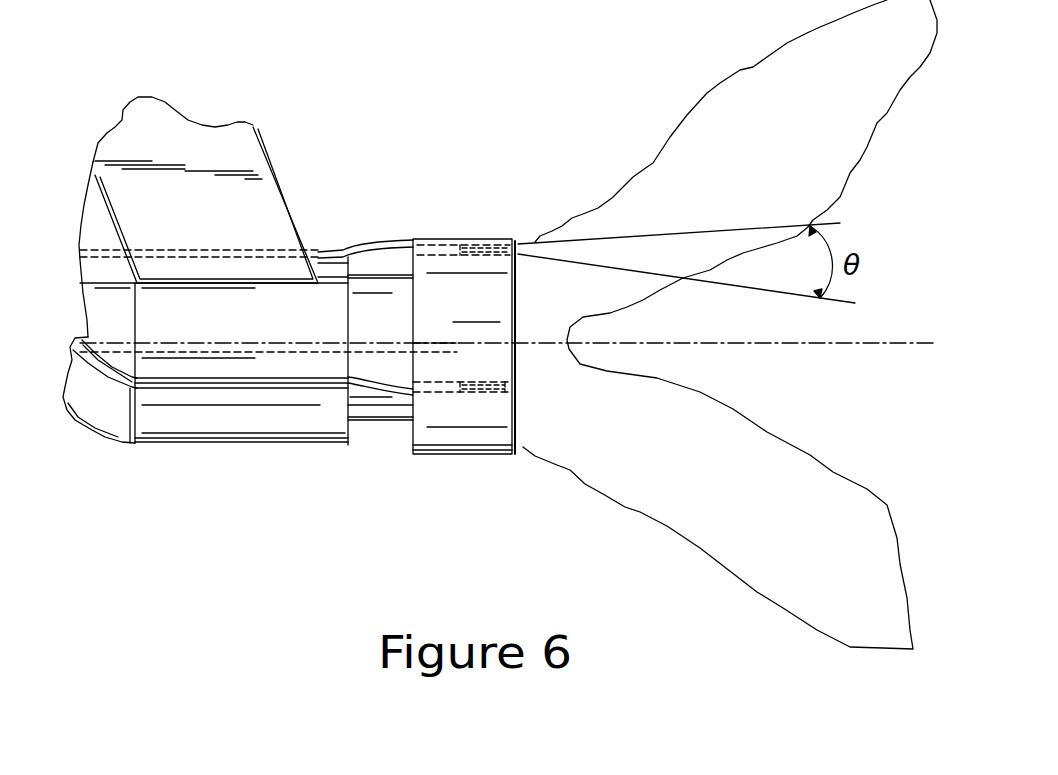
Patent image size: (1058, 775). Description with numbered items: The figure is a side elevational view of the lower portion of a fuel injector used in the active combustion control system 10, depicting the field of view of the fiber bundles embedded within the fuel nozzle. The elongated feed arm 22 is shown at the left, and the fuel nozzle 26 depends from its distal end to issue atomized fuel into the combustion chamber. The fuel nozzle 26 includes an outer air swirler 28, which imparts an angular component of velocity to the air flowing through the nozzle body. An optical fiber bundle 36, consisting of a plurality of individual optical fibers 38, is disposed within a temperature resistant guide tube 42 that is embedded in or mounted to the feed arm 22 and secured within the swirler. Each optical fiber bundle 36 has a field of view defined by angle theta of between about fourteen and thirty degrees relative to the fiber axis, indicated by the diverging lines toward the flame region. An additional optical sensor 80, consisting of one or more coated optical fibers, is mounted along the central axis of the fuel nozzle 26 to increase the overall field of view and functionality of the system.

The active combustion control system 10 is at (487, 124).
The feed arm 22 is at (255, 188).
The fuel nozzle 26 is at (217, 423).
The outer air swirler 28 is at (418, 432).
The optical fiber bundle 36 is at (437, 245).
The optical fiber 38 is at (498, 240).
The guide tube 42 is at (380, 240).
The optical sensor 80 is at (440, 346).